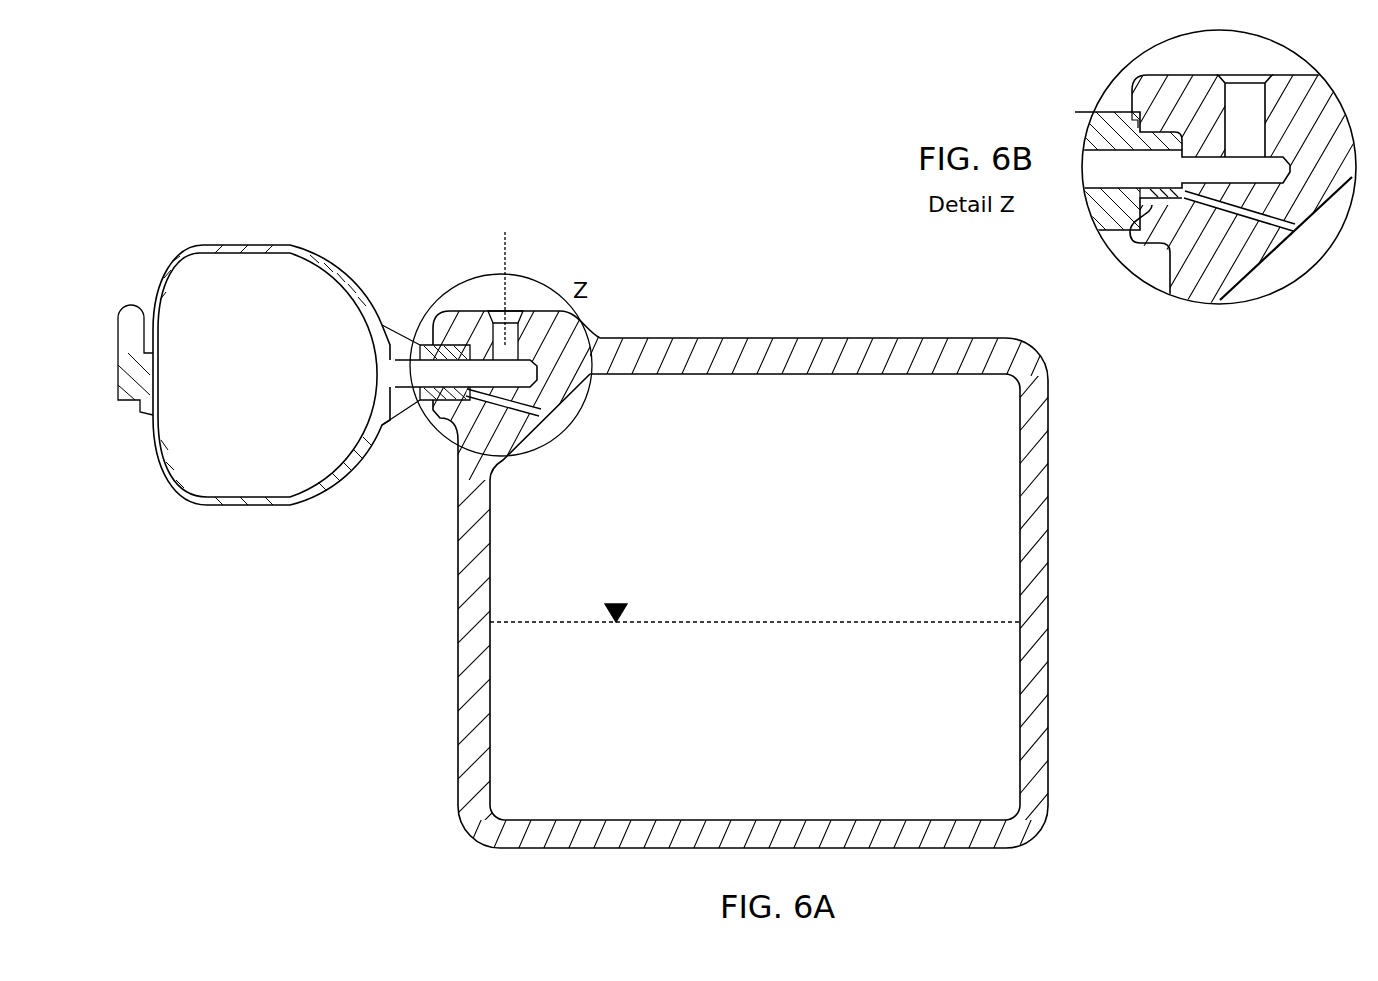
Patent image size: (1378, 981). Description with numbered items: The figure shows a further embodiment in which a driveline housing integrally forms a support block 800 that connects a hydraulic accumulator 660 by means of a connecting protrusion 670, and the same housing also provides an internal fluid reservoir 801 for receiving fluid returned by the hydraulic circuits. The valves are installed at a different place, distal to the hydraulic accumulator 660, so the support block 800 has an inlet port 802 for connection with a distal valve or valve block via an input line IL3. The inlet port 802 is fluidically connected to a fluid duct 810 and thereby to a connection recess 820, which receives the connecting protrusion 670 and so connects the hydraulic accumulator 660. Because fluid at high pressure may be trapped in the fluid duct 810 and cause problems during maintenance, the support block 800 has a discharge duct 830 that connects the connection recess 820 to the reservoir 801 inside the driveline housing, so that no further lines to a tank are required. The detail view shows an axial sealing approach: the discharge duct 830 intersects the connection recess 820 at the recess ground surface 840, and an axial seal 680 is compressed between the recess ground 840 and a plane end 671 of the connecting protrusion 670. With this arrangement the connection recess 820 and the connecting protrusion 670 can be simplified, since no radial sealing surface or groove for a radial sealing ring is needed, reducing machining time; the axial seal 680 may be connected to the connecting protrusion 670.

In FIG. 6A, the hydraulic accumulator 660 is at (374, 285).
In FIG. 6A, the connecting protrusion 670 is at (450, 345).
In FIG. 6B, the connecting protrusion 670 is at (1150, 128).
In FIG. 6B, the plane end 671 is at (1196, 155).
In FIG. 6A, the axial seal 680 is at (470, 478).
In FIG. 6B, the axial seal 680 is at (1162, 280).
In FIG. 6A, the support block 800 is at (570, 338).
In FIG. 6A, the internal fluid reservoir 801 is at (778, 738).
In FIG. 6A, the inlet port 802 is at (500, 312).
In FIG. 6A, the fluid duct 810 is at (555, 312).
In FIG. 6A, the connection recess 820 is at (438, 428).
In FIG. 6A, the discharge duct 830 is at (548, 394).
In FIG. 6B, the discharge duct 830 is at (1270, 222).
In FIG. 6B, the recess ground surface 840 is at (1200, 200).
In FIG. 6A, the input line IL3 is at (505, 238).